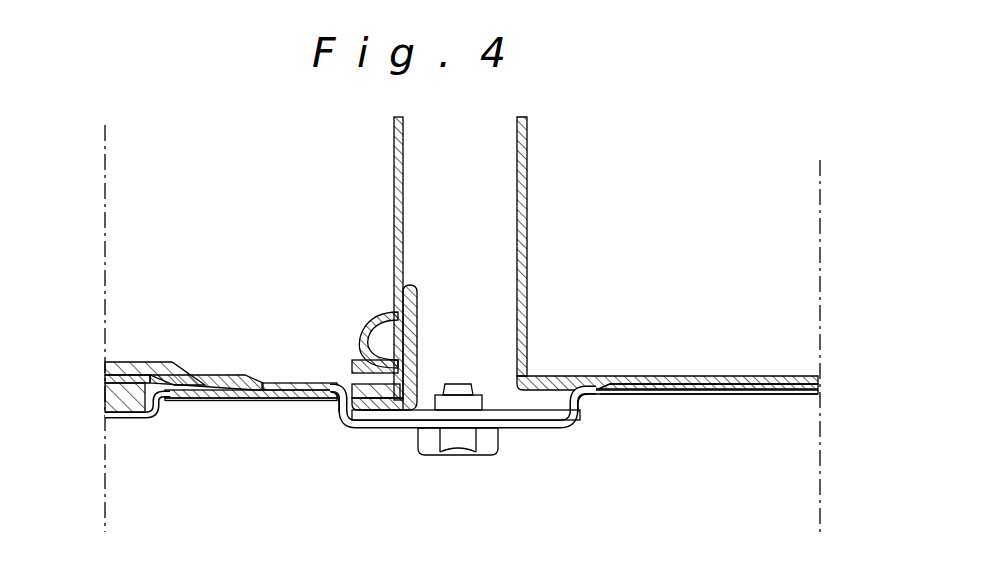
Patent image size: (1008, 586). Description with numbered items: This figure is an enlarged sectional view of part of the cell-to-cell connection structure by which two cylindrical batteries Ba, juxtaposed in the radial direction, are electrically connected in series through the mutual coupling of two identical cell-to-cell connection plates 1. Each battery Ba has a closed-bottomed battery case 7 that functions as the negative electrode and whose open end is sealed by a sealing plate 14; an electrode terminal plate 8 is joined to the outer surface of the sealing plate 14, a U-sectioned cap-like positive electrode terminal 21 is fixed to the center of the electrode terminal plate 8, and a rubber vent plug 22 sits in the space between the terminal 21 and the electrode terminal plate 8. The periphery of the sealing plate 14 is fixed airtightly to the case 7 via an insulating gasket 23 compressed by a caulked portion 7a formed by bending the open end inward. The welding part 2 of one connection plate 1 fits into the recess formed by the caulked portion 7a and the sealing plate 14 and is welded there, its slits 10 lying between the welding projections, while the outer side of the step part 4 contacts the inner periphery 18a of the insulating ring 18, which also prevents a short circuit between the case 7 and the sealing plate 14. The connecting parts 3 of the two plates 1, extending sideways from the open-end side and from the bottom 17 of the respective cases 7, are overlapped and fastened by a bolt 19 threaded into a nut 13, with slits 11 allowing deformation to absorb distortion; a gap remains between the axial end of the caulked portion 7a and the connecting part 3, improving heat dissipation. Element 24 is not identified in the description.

The cell-to-cell connection plate 1 is at (633, 394).
The welding part 2 is at (604, 390).
The connecting part 3 is at (360, 429).
The step part 4 is at (338, 412).
The battery case 7 is at (399, 238).
The caulked portion 7a is at (386, 404).
The electrode terminal plate 8 is at (128, 380).
The slit 10 is at (704, 394).
The slit 11 is at (403, 428).
The nut 13 is at (470, 392).
The sealing plate 14 is at (260, 383).
The bottom 17 is at (735, 376).
The insulating ring 18 is at (415, 330).
The inner periphery of insulating ring 18a is at (352, 380).
The bolt 19 is at (461, 442).
The cap-like positive electrode terminal 21 is at (135, 419).
The rubber vent plug 22 is at (113, 404).
The insulating gasket 23 is at (372, 318).
The sloped cover 24 is at (189, 358).
The cylindrical battery Ba is at (515, 152).